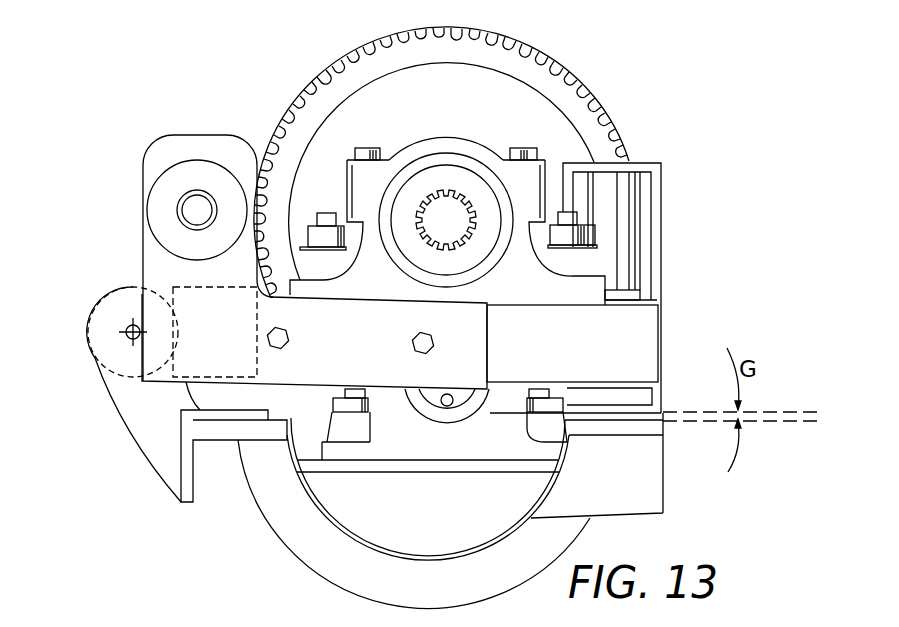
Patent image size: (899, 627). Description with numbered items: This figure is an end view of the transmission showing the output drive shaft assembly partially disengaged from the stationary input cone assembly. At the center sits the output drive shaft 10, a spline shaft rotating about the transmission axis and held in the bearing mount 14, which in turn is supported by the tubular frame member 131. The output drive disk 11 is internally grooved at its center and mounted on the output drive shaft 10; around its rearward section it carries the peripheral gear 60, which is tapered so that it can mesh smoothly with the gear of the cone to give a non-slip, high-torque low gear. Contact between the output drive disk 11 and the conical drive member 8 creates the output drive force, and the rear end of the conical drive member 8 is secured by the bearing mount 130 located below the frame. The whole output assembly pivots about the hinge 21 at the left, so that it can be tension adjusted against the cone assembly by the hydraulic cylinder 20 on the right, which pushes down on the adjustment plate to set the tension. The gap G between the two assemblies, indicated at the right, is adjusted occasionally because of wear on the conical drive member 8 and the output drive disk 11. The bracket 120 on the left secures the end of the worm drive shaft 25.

The conical drive member 8 is at (447, 402).
The output drive shaft 10 is at (440, 208).
The output drive disk 11 is at (556, 52).
The bearing mount 14 is at (440, 136).
The hydraulic cylinder 20 is at (620, 212).
The hinge 21 is at (130, 334).
The worm drive shaft 25 is at (197, 212).
The peripheral gear 60 is at (583, 88).
The bracket 120 is at (160, 262).
The bearing mount 130 is at (403, 440).
The tubular frame member 131 is at (620, 348).